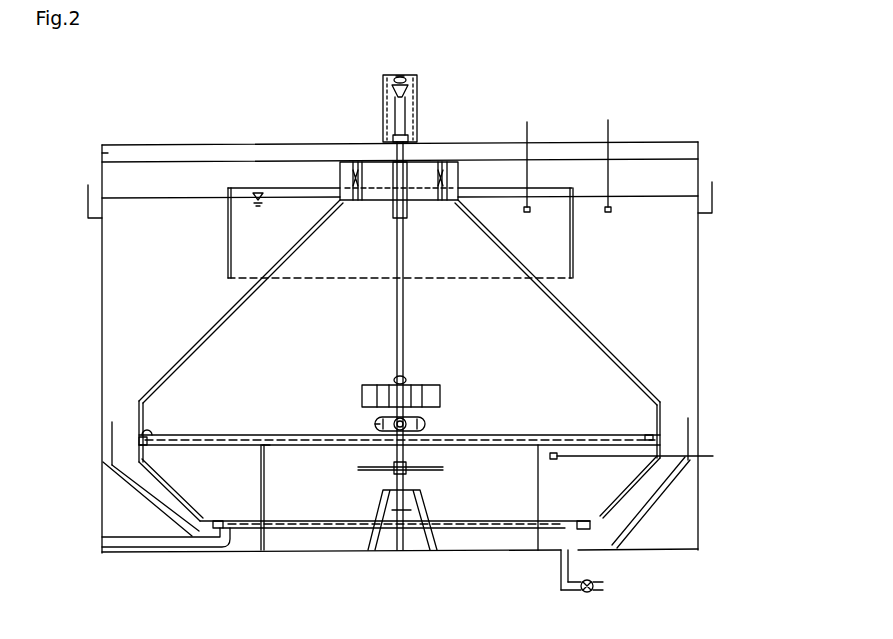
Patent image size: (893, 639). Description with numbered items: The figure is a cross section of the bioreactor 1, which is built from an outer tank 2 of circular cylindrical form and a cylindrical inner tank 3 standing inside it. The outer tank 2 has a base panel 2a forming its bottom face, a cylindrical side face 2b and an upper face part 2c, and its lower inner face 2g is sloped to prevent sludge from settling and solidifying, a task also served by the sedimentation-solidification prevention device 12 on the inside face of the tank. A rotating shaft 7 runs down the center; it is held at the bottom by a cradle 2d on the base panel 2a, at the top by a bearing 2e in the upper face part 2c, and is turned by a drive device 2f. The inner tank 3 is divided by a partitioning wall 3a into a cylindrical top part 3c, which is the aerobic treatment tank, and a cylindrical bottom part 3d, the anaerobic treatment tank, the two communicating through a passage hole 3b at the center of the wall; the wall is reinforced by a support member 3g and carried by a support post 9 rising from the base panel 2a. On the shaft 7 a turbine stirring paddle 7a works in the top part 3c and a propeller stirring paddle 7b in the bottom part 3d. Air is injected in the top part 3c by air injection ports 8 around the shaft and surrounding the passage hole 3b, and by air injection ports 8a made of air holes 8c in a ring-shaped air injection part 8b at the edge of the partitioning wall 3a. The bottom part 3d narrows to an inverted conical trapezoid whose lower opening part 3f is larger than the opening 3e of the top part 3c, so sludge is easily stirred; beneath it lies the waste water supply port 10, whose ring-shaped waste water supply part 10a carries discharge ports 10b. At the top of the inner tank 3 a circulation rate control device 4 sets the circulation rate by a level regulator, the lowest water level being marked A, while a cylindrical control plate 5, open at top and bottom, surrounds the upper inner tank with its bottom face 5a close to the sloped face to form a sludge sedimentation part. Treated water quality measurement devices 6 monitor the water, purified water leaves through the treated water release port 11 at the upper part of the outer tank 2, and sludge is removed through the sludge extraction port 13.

The bioreactor 1 is at (107, 138).
The water level A is at (188, 197).
The outer tank 2 is at (72, 295).
The base panel 2a is at (103, 556).
The cylindrical side face 2b is at (101, 349).
The upper face part 2c is at (102, 153).
The cradle 2d is at (375, 535).
The bearing 2e is at (407, 135).
The drive device 2f is at (410, 83).
The inner face of the lower part of the outer tank 2g is at (627, 532).
The cylindrical inner tank 3 is at (663, 420).
The partitioning wall 3a is at (290, 445).
The passage hole 3b is at (375, 447).
The cylindrical top part 3c is at (612, 386).
The cylindrical bottom part 3d is at (615, 480).
The opening of the cylindrical top part 3e is at (353, 186).
The lower opening part 3f is at (512, 516).
The support member 3g is at (220, 447).
The circulation rate control device 4 is at (447, 178).
The cylindrical control plate 5 is at (580, 223).
The bottom face of the cylindrical control plate 5a is at (572, 278).
The treated water quality measurement device 6 is at (527, 135).
The rotating shaft 7 is at (395, 157).
The stirring paddle 7a is at (435, 393).
The stirring paddle 7b is at (448, 468).
The air injection port 8 is at (375, 423).
The air injection port 8a is at (153, 436).
The air injection part 8b is at (266, 445).
The air hole 8c is at (143, 446).
The support post 9 is at (260, 532).
The waste water supply port 10 is at (218, 542).
The waste water supply part 10a is at (555, 528).
The discharge port 10b is at (580, 527).
The treated water release port 11 is at (95, 200).
The sedimentation-solidification prevention device 12 is at (652, 505).
The sludge extraction port 13 is at (574, 590).